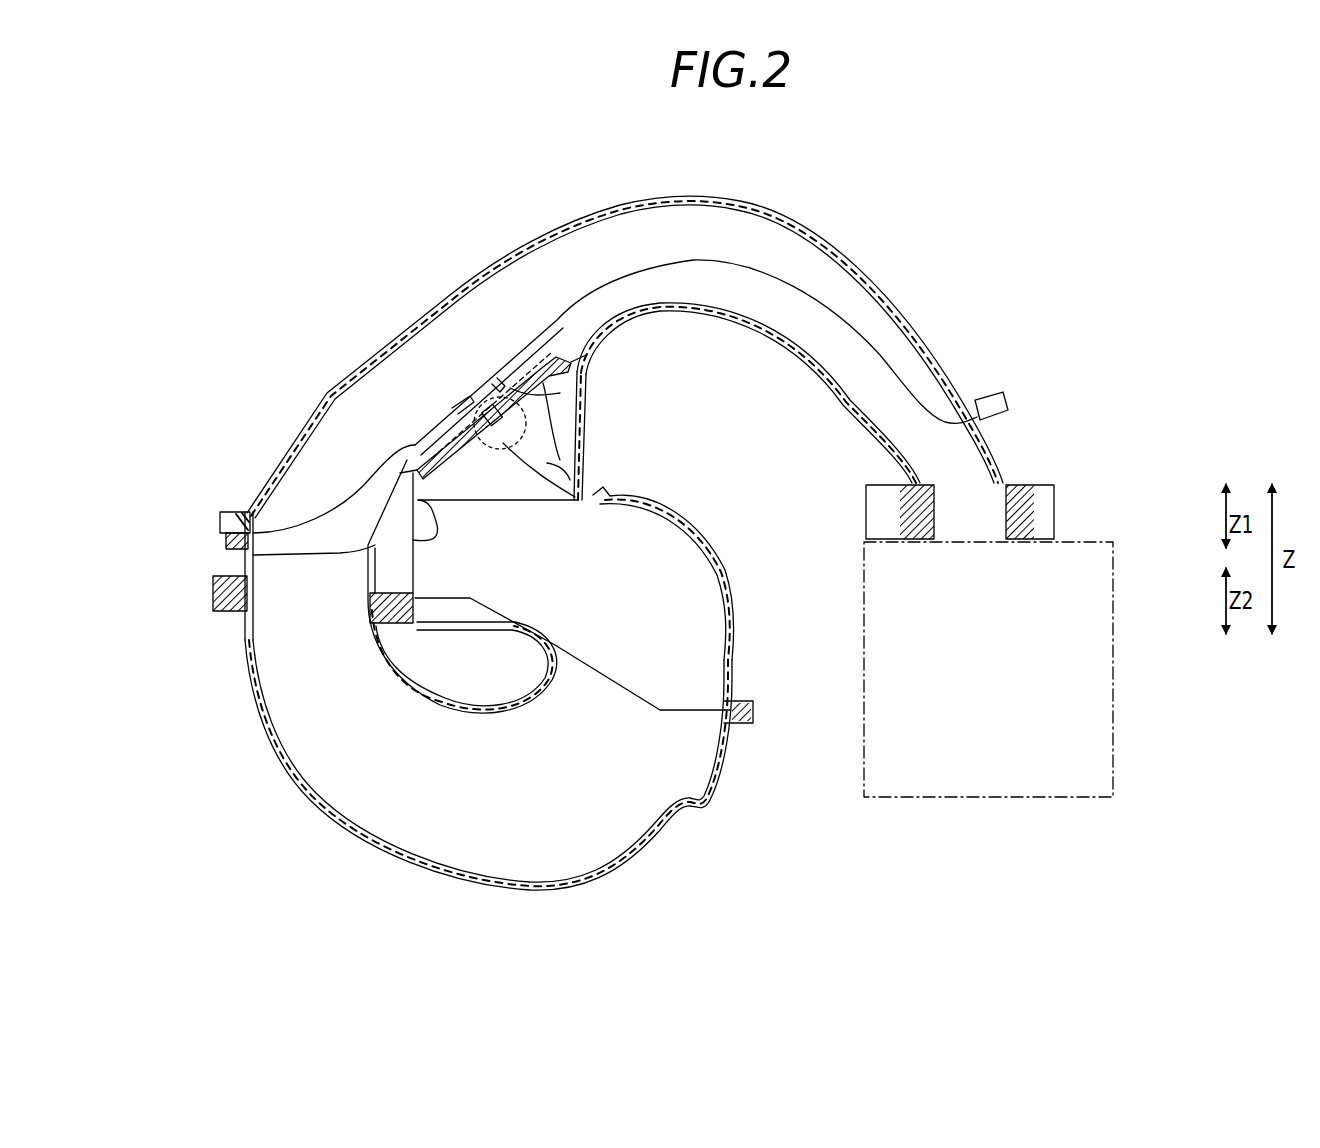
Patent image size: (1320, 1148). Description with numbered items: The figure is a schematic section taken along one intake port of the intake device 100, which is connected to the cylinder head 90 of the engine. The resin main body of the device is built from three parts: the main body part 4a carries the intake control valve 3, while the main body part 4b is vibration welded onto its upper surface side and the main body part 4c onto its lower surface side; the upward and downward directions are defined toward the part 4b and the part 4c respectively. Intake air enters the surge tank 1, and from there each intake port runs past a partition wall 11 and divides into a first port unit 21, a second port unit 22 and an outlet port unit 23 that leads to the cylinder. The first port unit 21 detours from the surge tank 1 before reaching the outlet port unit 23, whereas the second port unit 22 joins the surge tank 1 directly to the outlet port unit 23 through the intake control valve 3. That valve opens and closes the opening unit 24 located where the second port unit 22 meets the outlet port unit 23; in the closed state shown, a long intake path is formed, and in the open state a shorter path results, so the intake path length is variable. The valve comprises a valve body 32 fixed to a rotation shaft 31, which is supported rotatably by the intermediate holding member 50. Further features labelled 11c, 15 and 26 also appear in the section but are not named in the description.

The intake device 100 is at (980, 196).
The main body part 4a is at (698, 195).
The main body part 4b is at (677, 507).
The main body part 4c is at (655, 857).
The surge tank 1 is at (683, 630).
The partition wall 11 is at (590, 505).
The flange 11c is at (245, 555).
The vertical wall 15 is at (578, 378).
The first port unit 21 is at (385, 766).
The second port unit 22 is at (522, 488).
The outlet port unit 23 is at (866, 364).
The opening unit 24 is at (574, 338).
The passage 26 is at (508, 512).
The intake control valve 3 is at (504, 442).
The rotation shaft 31 is at (560, 460).
The valve body 32 is at (560, 393).
The intermediate holding member 50 is at (482, 382).
The cylinder head 90 is at (984, 800).